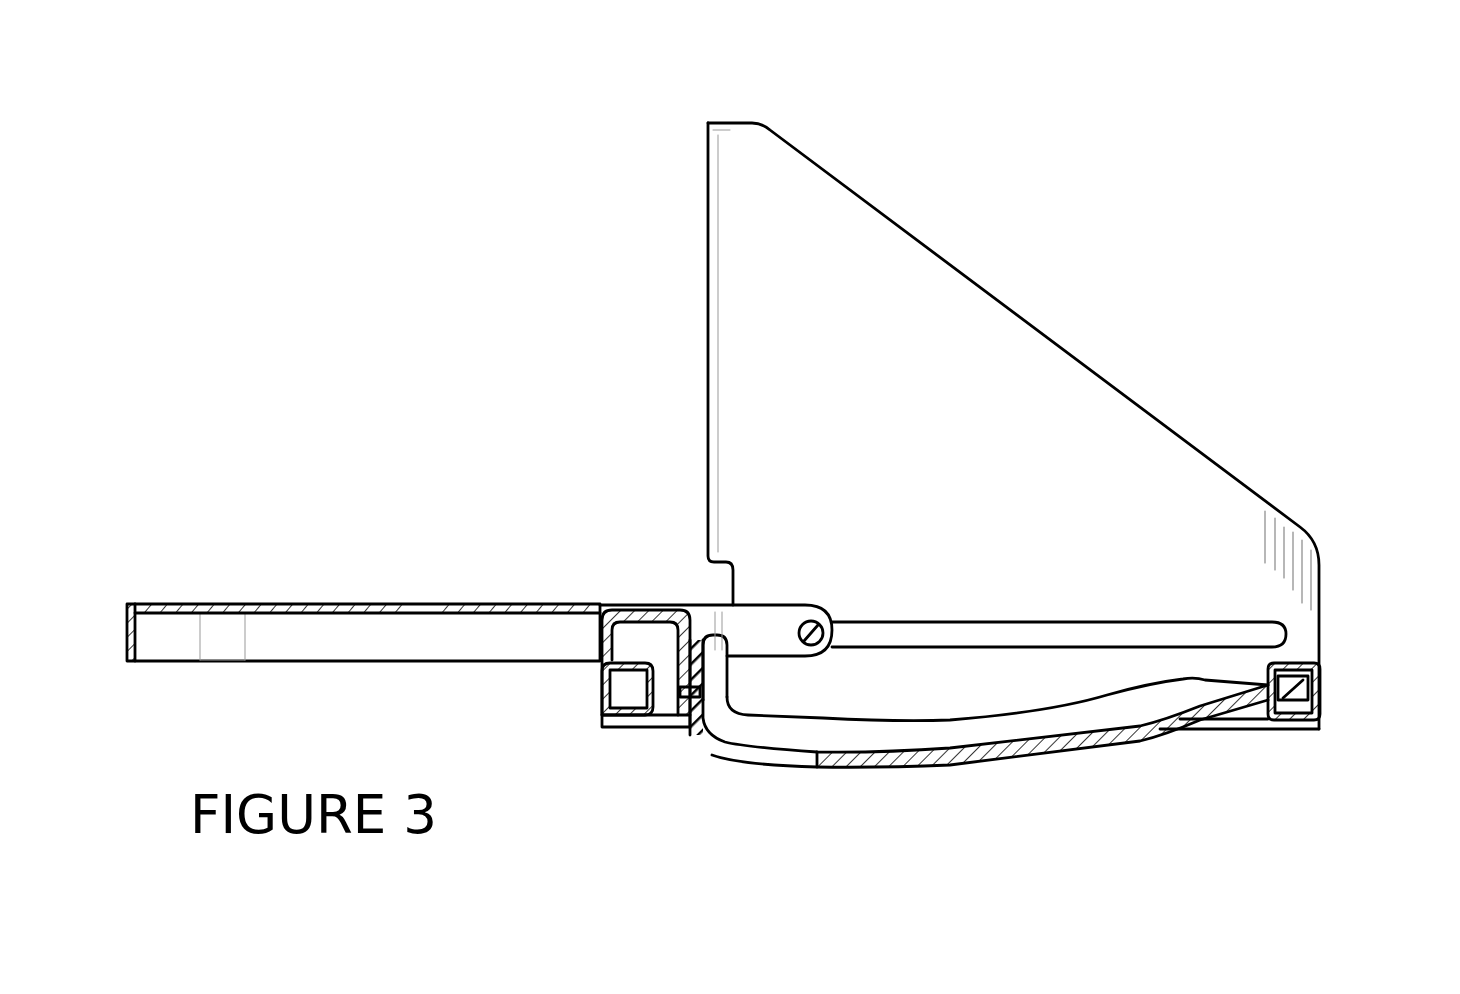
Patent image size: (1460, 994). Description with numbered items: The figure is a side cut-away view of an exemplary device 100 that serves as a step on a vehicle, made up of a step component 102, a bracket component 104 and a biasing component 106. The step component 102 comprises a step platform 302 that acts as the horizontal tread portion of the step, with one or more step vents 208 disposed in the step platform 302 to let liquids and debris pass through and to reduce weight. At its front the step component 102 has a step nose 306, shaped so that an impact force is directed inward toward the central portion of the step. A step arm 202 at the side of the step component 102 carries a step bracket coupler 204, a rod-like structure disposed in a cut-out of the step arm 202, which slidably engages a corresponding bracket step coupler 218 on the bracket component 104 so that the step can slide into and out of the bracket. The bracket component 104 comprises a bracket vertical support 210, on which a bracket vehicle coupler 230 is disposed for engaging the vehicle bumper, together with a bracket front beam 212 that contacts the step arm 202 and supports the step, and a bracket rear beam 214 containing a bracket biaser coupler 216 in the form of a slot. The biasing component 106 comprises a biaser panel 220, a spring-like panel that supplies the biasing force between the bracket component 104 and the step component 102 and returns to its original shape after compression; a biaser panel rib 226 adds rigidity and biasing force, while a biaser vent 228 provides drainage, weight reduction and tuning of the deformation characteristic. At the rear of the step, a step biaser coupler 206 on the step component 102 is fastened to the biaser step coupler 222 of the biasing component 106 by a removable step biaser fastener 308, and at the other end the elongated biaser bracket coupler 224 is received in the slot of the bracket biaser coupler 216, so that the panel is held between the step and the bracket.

The exemplary device 100 is at (1214, 101).
The step component 102 is at (178, 700).
The bracket component 104 is at (745, 95).
The biasing component 106 is at (1015, 775).
The step arm 202 is at (800, 605).
The step bracket coupler 204 is at (822, 626).
The step biaser coupler 206 is at (645, 618).
The step vent 208 is at (262, 585).
The bracket vertical support 210 is at (1095, 415).
The bracket front beam 212 is at (600, 698).
The bracket rear beam 214 is at (1312, 720).
The bracket biaser coupler 216 is at (1312, 672).
The bracket step coupler 218 is at (1200, 637).
The biaser panel 220 is at (1082, 745).
The biaser step coupler 222 is at (692, 720).
The biaser bracket coupler 224 is at (1284, 694).
The biaser panel rib 226 is at (1115, 698).
The biaser vent 228 is at (790, 782).
The bracket vehicle coupler 230 is at (708, 148).
The step platform 302 is at (470, 604).
The step nose 306 is at (142, 670).
The step biaser fastener 308 is at (680, 692).